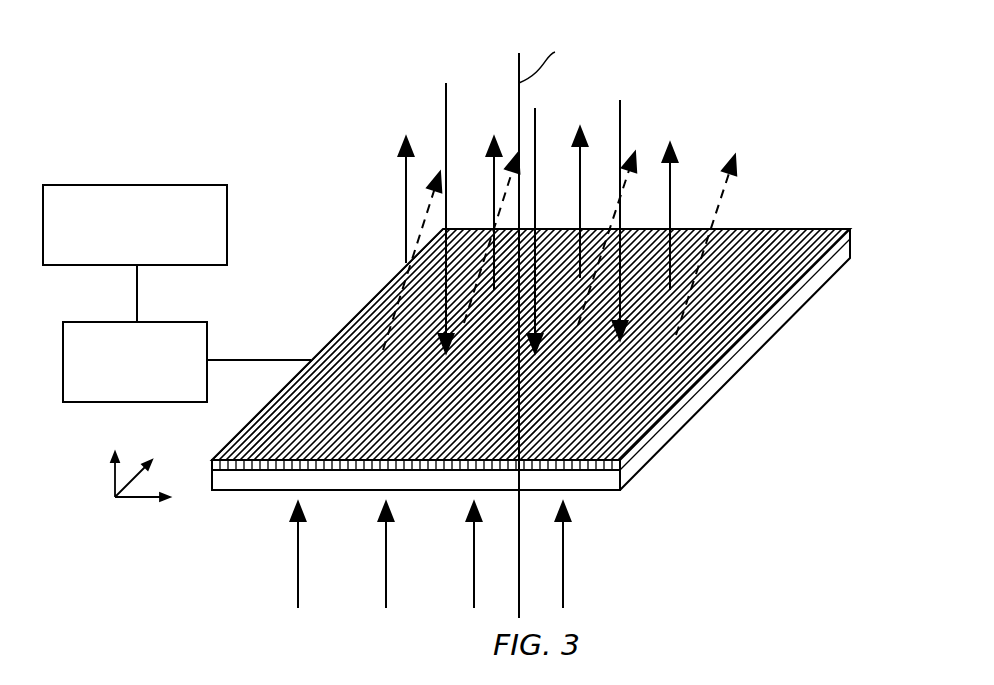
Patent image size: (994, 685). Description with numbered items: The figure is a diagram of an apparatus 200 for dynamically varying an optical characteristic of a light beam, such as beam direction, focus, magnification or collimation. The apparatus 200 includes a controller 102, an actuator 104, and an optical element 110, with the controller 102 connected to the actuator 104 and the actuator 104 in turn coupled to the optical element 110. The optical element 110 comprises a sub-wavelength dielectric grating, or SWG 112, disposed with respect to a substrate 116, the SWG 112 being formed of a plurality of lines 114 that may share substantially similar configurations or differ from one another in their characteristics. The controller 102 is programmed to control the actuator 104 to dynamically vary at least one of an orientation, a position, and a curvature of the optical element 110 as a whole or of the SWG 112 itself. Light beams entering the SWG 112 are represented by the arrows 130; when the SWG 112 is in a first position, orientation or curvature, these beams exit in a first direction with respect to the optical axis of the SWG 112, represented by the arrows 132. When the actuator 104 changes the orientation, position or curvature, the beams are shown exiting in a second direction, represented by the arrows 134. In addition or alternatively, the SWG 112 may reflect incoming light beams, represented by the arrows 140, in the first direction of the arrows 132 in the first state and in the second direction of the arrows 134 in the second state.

The apparatus 200 is at (264, 118).
The controller 102 is at (150, 249).
The actuator 104 is at (152, 386).
The optical element 110 is at (351, 265).
The sub-wavelength dielectric grating (SWG) 112 is at (603, 349).
The lines 114 is at (698, 405).
The substrate 116 is at (663, 445).
The arrows representing light beams entering the SWG 130 is at (563, 558).
The arrows representing light beams exiting in a first direction 132 is at (672, 172).
The arrows representing light beams exiting in a second direction 134 is at (724, 197).
The arrows representing light beams to be reflected 140 is at (447, 147).